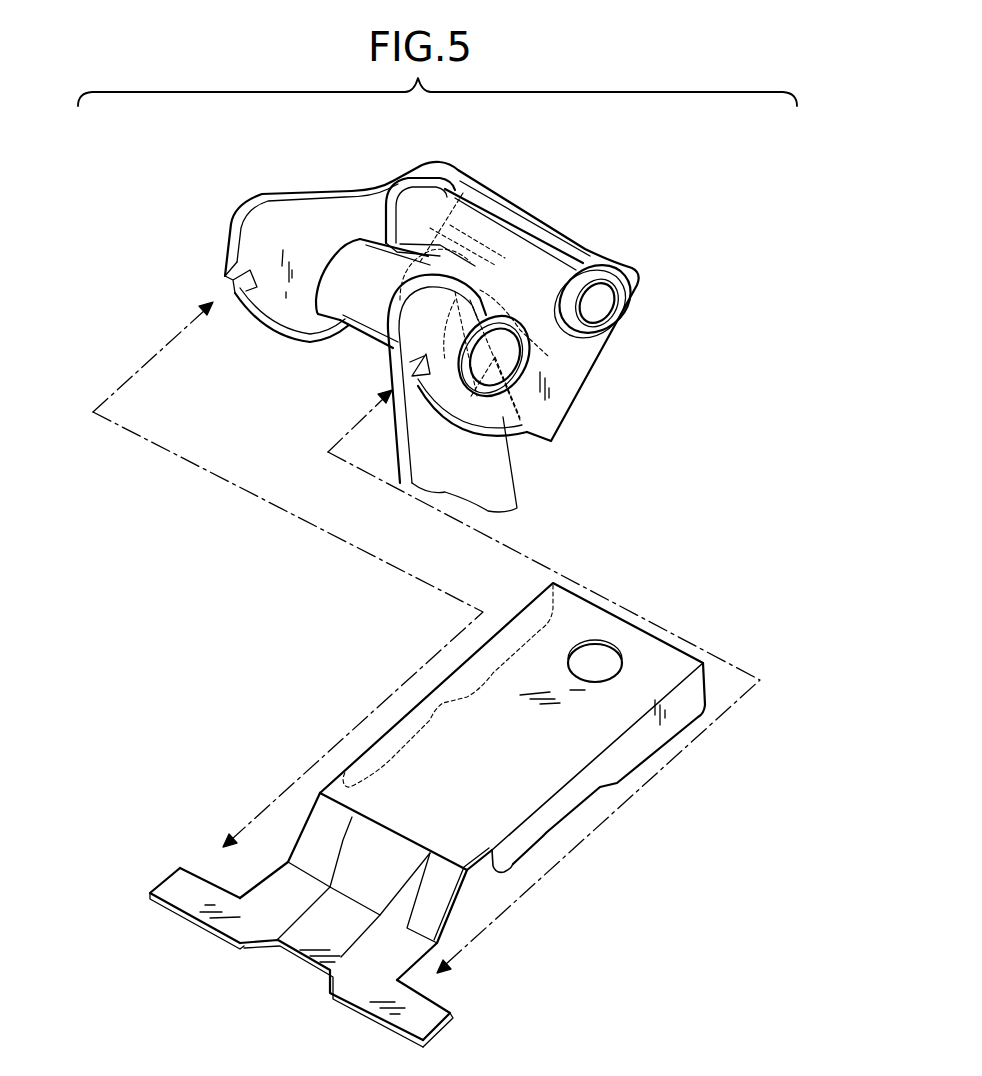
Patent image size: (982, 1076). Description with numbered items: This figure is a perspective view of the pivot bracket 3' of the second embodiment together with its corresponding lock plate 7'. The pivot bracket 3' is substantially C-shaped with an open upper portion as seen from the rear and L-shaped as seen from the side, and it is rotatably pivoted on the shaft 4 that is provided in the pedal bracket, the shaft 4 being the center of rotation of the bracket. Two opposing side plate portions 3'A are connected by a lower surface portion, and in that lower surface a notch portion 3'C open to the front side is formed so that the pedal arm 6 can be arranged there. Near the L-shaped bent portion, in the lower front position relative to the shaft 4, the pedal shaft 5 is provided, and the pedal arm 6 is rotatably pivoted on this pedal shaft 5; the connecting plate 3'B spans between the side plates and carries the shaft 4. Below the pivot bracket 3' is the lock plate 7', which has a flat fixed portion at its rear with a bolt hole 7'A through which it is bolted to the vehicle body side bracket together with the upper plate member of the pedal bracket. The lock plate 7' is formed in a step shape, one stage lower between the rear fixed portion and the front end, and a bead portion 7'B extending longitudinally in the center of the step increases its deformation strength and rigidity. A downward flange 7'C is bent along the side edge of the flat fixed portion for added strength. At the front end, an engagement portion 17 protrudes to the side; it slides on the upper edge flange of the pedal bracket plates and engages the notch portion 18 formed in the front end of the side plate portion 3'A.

The pivot bracket 3' is at (447, 321).
The side plate portion 3'A is at (445, 285).
The connecting top plate of bracket 3'B is at (516, 265).
The notch portion 3'C is at (448, 379).
The shaft 4 is at (496, 230).
The pedal shaft 5 is at (347, 322).
The pedal arm 6 is at (510, 490).
The lock plate 7' is at (451, 808).
The bolt hole 7'A is at (632, 625).
The bead portion 7'B is at (366, 889).
The downward flange 7'C is at (621, 763).
The engagement portion 17 is at (172, 882).
The notch portion 18 is at (233, 292).